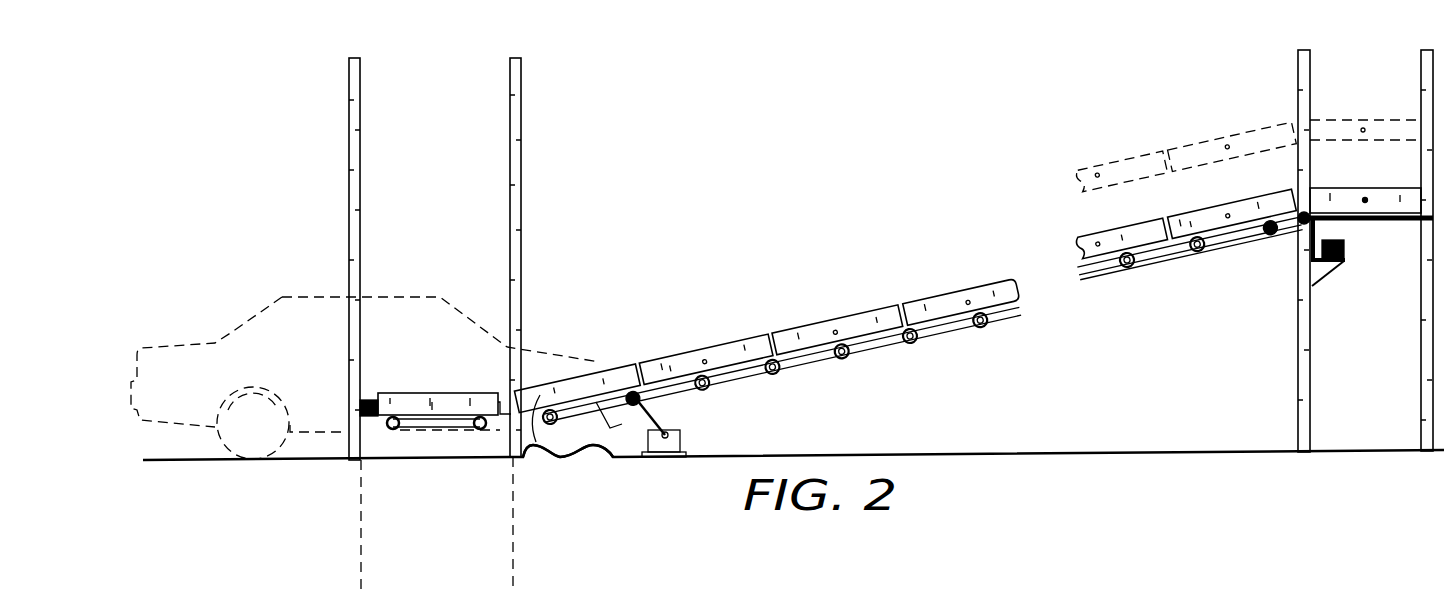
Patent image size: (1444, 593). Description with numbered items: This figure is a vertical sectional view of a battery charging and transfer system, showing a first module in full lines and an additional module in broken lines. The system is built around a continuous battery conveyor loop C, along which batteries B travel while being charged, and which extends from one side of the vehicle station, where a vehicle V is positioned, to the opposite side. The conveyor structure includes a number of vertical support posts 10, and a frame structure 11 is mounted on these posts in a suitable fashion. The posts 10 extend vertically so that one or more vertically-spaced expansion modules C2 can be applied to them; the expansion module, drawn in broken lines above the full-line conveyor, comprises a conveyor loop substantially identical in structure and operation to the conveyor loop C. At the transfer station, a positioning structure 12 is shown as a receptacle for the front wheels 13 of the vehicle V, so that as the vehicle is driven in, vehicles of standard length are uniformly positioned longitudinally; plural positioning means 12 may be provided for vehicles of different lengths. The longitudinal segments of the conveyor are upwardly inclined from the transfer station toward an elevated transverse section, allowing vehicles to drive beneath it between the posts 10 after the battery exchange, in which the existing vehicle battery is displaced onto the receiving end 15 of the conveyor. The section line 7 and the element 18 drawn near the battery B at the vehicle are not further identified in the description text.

The vertical support posts 10 is at (510, 113).
The vehicle V is at (232, 332).
The batteries B is at (406, 384).
The latch bracket 18 is at (377, 394).
The section line 7- 7 is at (437, 392).
The conveyor loop C is at (707, 288).
The front wheels 13 is at (560, 442).
The positioning structure 12 is at (597, 449).
The frame structure 11 is at (1231, 270).
The expansion modules C2 is at (1252, 142).
The receiving end 15 is at (660, 592).